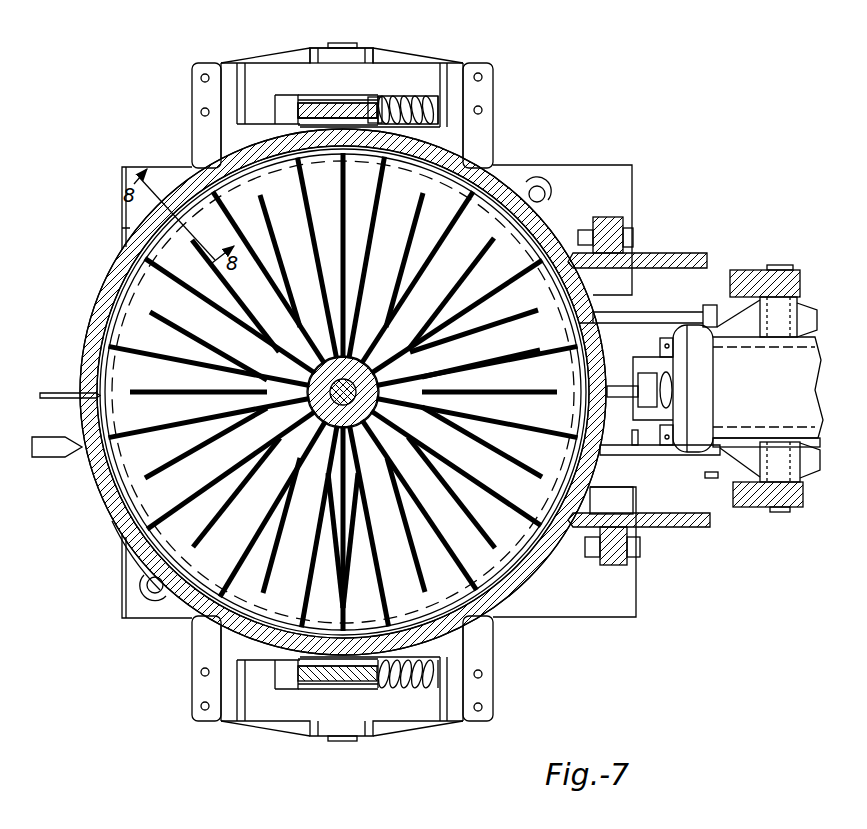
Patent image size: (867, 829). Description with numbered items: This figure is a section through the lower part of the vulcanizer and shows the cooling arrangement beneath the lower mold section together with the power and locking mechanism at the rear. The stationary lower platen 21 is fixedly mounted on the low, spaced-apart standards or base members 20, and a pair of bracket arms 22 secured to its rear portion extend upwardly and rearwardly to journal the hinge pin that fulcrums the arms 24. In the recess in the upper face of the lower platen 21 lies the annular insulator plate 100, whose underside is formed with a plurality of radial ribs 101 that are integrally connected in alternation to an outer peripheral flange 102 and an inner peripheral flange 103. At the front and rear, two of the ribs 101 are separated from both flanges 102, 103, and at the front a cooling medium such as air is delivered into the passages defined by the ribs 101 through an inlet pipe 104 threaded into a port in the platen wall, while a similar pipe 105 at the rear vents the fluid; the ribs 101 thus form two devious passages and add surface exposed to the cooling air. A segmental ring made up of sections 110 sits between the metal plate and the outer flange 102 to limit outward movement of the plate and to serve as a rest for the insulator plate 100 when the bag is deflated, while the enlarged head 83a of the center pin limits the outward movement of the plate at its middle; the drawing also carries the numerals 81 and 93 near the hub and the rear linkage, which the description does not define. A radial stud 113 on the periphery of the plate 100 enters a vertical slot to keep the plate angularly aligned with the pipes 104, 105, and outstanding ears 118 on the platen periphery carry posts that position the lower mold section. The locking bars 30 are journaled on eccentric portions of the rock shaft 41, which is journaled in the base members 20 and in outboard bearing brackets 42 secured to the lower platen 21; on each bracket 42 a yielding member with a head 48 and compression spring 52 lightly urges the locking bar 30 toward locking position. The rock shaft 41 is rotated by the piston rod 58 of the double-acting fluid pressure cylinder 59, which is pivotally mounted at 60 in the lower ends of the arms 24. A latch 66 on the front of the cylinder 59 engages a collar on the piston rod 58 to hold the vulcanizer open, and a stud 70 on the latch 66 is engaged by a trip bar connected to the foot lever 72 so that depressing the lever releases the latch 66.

The standards or base members 20 is at (612, 178).
The lower platen 21 is at (96, 496).
The bracket arms 22 is at (684, 254).
The arms 24 is at (745, 270).
The locking bars 30 is at (322, 100).
The rock shaft 41 is at (352, 45).
The outboard bearing brackets 42 is at (357, 74).
The head 48 is at (384, 110).
The compression spring 52 is at (432, 110).
The piston rod 58 is at (614, 380).
The double-acting fluid pressure operated cylinder 59 is at (748, 388).
The pivot mounting 60 is at (780, 266).
The latch 66 is at (668, 410).
The stud 70 is at (645, 410).
The angular foot lever 72 is at (58, 458).
The hub bore 81 is at (358, 398).
The enlarged head of center pin 83a is at (310, 393).
The rod 93 is at (660, 312).
The annular insulator plate 100 is at (128, 580).
The radial ribs 101 is at (175, 308).
The outer peripheral flange 102 is at (136, 532).
The inner peripheral flange 103 is at (380, 389).
The inlet pipe 104 is at (48, 392).
The pipe 105 is at (632, 440).
The segmental ring sections 110 is at (478, 158).
The radial stud 113 is at (130, 221).
The outstanding ears 118 is at (545, 185).